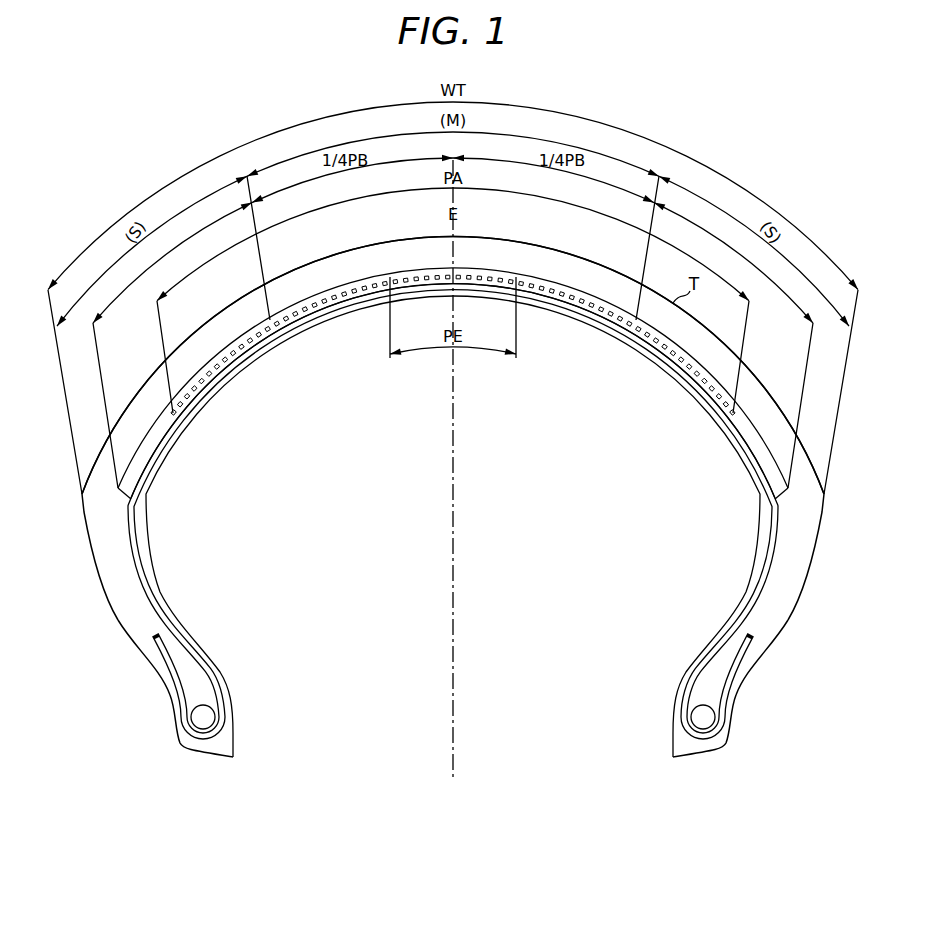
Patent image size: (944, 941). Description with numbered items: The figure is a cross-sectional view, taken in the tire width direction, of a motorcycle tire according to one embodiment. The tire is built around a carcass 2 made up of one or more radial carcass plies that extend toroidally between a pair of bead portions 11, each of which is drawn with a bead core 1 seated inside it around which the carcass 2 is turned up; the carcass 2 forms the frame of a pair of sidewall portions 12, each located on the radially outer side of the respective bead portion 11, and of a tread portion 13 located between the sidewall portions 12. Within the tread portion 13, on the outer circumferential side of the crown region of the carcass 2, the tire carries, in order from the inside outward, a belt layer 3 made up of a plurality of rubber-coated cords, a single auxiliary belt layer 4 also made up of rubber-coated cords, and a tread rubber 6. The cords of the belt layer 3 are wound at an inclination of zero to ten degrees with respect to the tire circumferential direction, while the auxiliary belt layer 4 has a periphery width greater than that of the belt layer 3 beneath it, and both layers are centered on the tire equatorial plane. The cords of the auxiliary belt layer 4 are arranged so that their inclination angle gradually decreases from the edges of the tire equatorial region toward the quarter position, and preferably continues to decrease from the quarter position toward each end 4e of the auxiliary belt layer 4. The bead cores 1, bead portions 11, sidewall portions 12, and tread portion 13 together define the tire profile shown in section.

The bead core 1 is at (206, 717).
The carcass 2 is at (148, 605).
The belt layer 3 is at (213, 376).
The auxiliary belt layer 4 is at (231, 347).
The end of the auxiliary belt layer 4e is at (133, 516).
The tread rubber 6 is at (582, 267).
The bead portion 11 is at (142, 683).
The sidewall portion 12 is at (88, 553).
The tread portion 13 is at (148, 360).